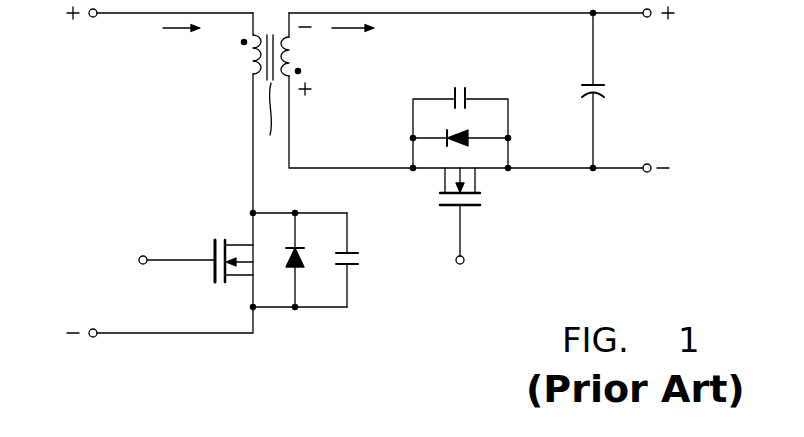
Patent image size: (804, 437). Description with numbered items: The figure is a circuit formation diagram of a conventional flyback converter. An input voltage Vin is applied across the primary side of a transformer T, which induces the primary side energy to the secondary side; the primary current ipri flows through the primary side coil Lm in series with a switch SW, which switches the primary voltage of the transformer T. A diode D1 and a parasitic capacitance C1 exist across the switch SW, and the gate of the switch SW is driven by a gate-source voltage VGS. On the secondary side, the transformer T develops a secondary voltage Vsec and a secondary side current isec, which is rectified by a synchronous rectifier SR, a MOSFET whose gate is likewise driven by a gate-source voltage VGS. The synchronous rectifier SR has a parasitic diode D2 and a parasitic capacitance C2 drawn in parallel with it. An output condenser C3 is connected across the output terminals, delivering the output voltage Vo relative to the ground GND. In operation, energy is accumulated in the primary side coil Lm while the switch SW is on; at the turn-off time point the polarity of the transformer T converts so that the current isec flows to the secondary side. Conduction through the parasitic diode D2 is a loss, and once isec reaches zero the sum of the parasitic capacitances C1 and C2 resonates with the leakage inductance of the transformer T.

The input voltage Vin is at (144, 172).
The primary current ipri is at (164, 28).
The primary side coil Lm is at (247, 60).
The transformer T is at (270, 96).
The secondary voltage Vsec is at (462, 90).
The secondary side current isec is at (371, 28).
The output voltage Vo is at (482, 89).
The ground GND is at (648, 191).
The output condenser C3 is at (576, 90).
The parasitic capacitance C2 is at (460, 114).
The parasitic diode D2 is at (460, 143).
The synchronous rectifier SR is at (478, 183).
The gate-source voltage VGS is at (280, 272).
The switch SW is at (242, 240).
The diode D1 is at (298, 259).
The parasitic capacitance C1 is at (361, 260).